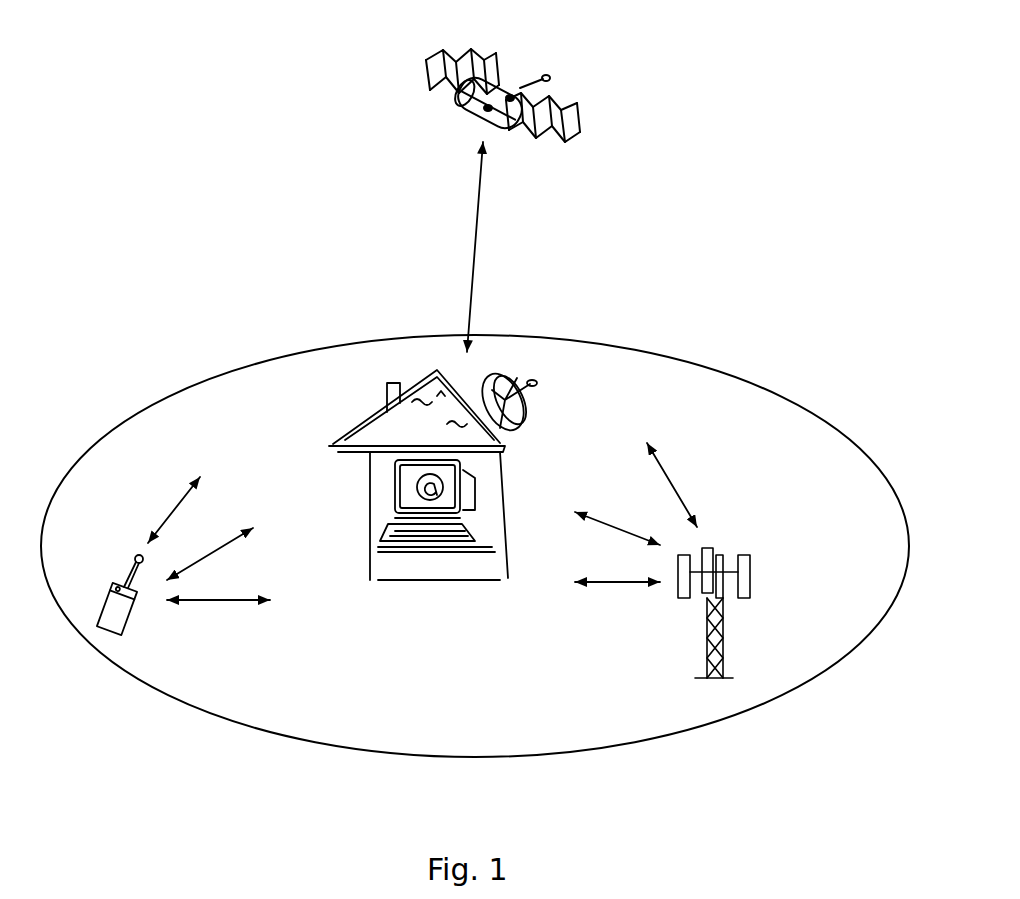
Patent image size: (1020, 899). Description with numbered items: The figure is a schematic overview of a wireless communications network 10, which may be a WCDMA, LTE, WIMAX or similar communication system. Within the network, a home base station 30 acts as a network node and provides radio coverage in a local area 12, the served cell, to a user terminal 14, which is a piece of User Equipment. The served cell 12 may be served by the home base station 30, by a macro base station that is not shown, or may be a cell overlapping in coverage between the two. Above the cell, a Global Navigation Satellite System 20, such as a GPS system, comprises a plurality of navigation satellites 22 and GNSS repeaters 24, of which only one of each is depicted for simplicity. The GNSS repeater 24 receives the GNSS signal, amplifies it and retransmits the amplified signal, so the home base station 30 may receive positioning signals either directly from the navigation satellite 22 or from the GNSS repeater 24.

The wireless communications network 10 is at (208, 140).
The local area 12 is at (166, 405).
The user terminal 14 is at (115, 635).
The Global Navigation Satellite System 20 is at (690, 191).
The navigation satellite 22 is at (440, 63).
The GNSS repeater 24 is at (752, 577).
The home base station 30 is at (434, 580).